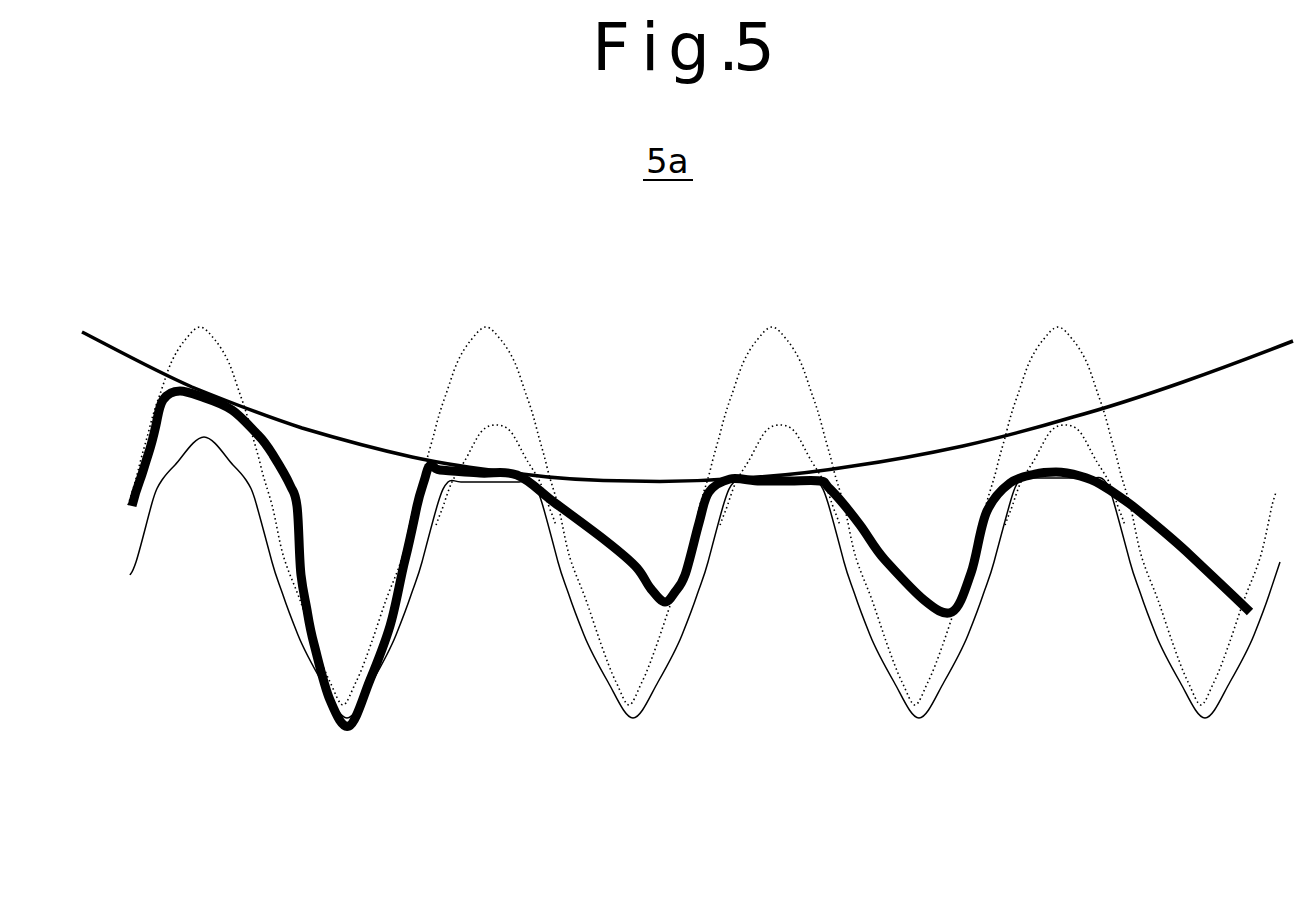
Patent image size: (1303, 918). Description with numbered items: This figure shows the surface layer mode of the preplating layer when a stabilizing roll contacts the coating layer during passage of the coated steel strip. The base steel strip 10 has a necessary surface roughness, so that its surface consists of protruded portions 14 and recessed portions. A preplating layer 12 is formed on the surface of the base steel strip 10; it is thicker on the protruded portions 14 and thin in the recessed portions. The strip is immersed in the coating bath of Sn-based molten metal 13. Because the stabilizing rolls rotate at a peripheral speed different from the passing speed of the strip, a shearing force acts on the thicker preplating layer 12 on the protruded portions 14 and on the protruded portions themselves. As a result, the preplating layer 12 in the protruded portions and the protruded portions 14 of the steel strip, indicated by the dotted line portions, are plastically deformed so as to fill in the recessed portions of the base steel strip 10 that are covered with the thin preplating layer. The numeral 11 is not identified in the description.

The base steel strip 10 is at (512, 752).
The surface profile valleys 11 is at (668, 689).
The preplating layer 12 is at (187, 425).
The Sn-based molten metal 13 is at (1210, 468).
The protruded portions 14 is at (194, 534).